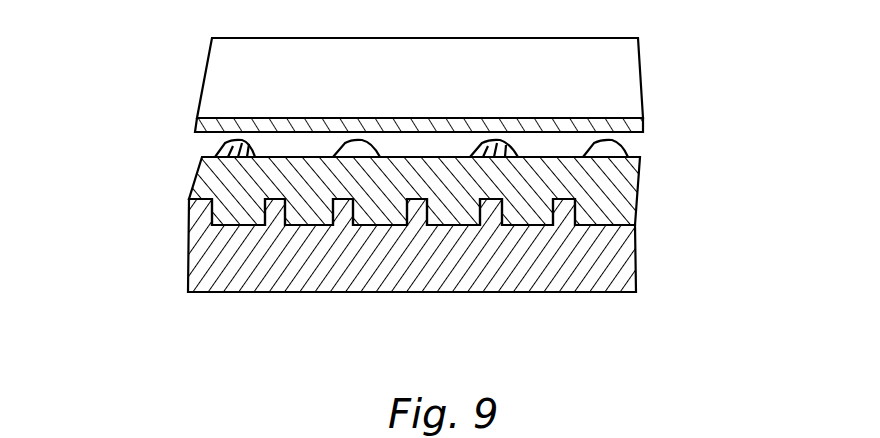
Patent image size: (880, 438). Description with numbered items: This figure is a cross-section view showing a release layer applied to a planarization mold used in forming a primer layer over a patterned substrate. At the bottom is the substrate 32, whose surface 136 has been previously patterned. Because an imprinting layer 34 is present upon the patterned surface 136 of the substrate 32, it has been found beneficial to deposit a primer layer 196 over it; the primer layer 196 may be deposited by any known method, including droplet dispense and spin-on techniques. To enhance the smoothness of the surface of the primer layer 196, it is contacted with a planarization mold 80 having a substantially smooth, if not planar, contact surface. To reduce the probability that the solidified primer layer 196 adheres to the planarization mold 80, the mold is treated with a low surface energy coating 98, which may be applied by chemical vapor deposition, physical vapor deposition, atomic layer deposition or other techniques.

The planarization mold 80 is at (641, 76).
The low surface energy coating 98 is at (645, 121).
The imprinting layer 34 is at (206, 147).
The primer layer 196 is at (640, 185).
The surface 136 is at (195, 202).
The substrate 32 is at (640, 255).